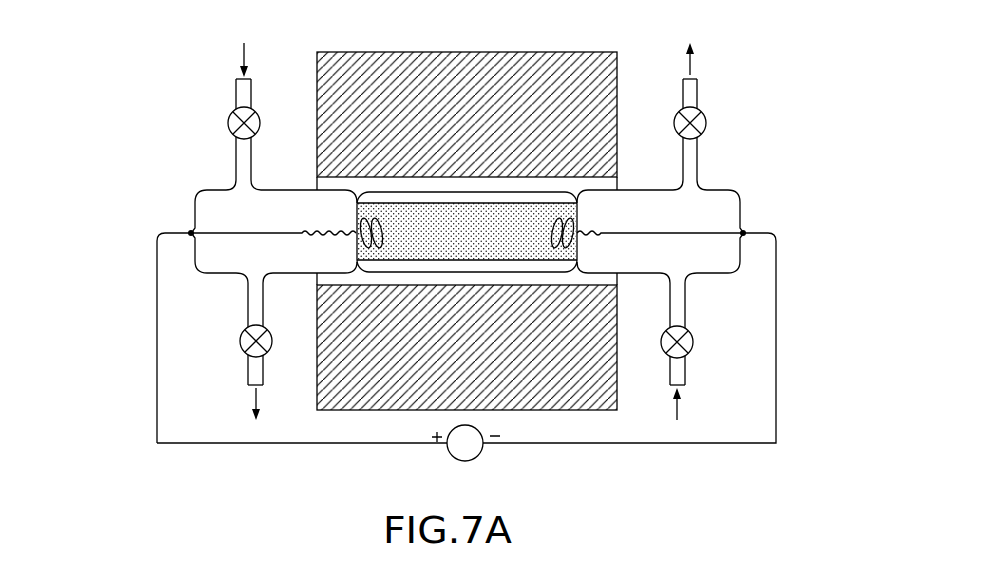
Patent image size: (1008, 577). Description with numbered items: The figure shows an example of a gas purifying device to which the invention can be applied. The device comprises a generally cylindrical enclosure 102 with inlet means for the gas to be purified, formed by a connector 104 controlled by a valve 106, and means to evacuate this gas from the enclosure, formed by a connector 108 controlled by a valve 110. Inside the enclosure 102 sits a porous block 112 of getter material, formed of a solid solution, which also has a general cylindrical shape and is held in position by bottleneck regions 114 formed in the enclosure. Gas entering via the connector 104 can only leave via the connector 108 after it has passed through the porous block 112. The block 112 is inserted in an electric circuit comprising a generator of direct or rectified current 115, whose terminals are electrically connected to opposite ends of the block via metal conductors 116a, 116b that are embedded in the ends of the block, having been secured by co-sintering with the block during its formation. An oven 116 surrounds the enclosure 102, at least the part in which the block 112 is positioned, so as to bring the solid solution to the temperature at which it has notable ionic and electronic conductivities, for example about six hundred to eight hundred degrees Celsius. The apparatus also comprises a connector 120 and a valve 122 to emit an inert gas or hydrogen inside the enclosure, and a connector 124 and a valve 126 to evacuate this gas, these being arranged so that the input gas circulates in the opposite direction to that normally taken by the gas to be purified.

The enclosure 102 is at (540, 192).
The connector 104 is at (237, 97).
The valve 106 is at (229, 127).
The connector 108 is at (698, 98).
The valve 110 is at (706, 127).
The porous block 112 is at (390, 212).
The bottleneck regions 114 is at (583, 208).
The generator of direct or rectified current 115 is at (478, 452).
The oven 116 is at (352, 395).
The metal conductor 116a is at (250, 232).
The metal conductor 116b is at (703, 230).
The connector 120 is at (686, 372).
The valve 122 is at (694, 343).
The connector 124 is at (248, 320).
The valve 126 is at (241, 347).